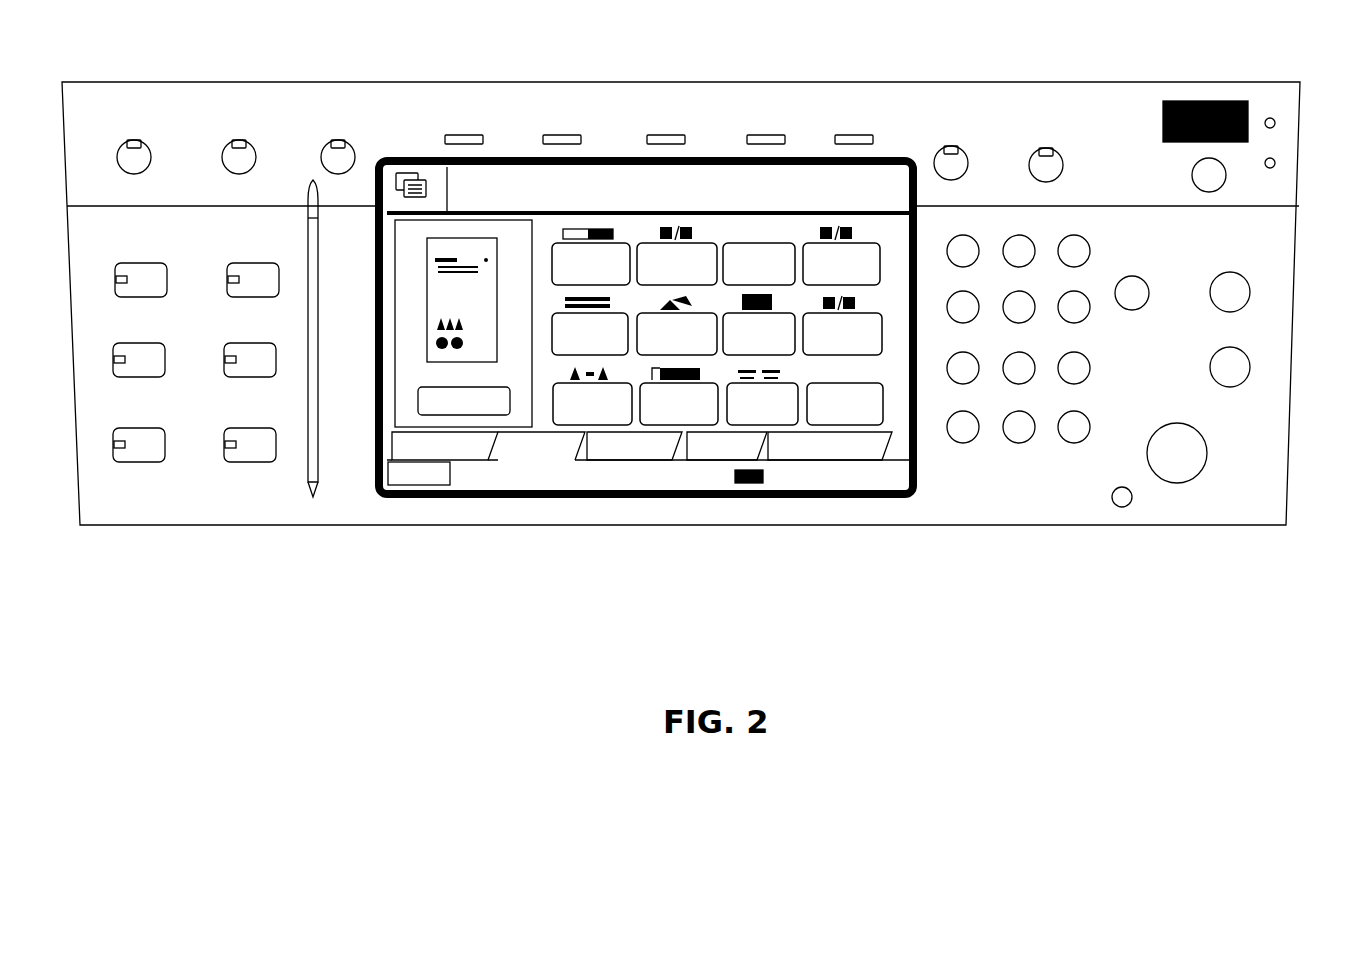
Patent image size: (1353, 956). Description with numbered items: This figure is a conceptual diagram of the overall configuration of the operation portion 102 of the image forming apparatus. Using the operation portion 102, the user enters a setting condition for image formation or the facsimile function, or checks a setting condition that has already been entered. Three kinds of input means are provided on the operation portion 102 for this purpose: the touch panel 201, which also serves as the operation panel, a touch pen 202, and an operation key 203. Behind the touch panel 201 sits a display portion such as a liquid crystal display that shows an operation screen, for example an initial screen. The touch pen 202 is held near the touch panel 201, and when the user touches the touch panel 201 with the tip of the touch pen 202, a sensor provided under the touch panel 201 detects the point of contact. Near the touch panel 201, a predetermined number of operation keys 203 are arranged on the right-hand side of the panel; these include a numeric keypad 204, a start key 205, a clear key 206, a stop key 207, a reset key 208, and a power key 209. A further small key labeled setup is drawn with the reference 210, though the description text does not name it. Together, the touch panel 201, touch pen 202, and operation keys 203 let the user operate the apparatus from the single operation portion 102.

The operation portion 102 is at (693, 545).
The touch panel 201 is at (490, 508).
The touch pen 202 is at (313, 497).
The operation key 203 is at (1098, 378).
The numeric keypad 204 is at (1013, 465).
The start key 205 is at (1177, 465).
The clear key 206 is at (1127, 310).
The stop key 207 is at (1230, 377).
The reset key 208 is at (1232, 303).
The power key 209 is at (1215, 185).
The setup key 210 is at (1122, 497).